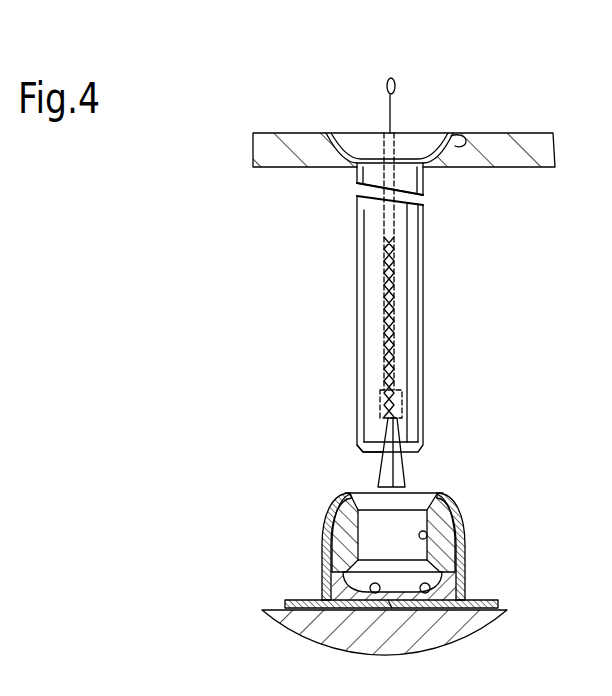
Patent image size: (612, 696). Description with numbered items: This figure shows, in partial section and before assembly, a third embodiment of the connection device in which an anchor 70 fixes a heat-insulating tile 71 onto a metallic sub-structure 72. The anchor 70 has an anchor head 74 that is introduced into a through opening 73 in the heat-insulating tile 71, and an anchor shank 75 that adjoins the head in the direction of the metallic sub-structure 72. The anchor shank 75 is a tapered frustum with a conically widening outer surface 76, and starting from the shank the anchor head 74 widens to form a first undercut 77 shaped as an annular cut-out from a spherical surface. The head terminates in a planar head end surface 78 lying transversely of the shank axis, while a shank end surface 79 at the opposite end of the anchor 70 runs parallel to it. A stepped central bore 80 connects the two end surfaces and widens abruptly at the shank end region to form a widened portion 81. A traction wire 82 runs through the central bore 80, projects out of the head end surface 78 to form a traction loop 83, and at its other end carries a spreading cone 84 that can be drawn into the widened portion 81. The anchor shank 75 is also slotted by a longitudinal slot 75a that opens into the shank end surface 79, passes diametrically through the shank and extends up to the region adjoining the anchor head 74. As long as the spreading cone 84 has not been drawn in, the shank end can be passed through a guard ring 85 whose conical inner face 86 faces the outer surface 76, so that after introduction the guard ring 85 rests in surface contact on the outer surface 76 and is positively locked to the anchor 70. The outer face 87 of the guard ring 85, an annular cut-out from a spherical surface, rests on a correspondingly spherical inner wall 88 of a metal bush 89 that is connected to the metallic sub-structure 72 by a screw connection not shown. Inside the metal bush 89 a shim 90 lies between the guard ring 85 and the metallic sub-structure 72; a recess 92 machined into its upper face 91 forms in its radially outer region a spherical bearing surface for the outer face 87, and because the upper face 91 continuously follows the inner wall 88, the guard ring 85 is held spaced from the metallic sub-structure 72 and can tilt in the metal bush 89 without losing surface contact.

The anchor 70 is at (342, 278).
The heat-insulating tile 71 is at (503, 157).
The metallic sub-structure 72 is at (485, 620).
The through opening 73 is at (340, 147).
The anchor head 74 is at (430, 136).
The anchor shank 75 is at (413, 335).
The longitudinal slot 75a is at (385, 330).
The outer surface 76 is at (425, 297).
The first undercut 77 is at (456, 145).
The head end surface 78 is at (367, 132).
The shank end surface 79 is at (368, 455).
The central bore 80 is at (383, 223).
The widened portion 81 is at (415, 398).
The traction wire 82 is at (386, 133).
The traction loop 83 is at (396, 82).
The spreading cone 84 is at (393, 470).
The guard ring 85 is at (440, 510).
The inner face 86 is at (426, 535).
The outer face 87 is at (328, 520).
The inner wall 88 is at (322, 586).
The metal bush 89 is at (478, 569).
The shim 90 is at (392, 603).
The upper face 91 is at (375, 585).
The recess 92 is at (425, 590).